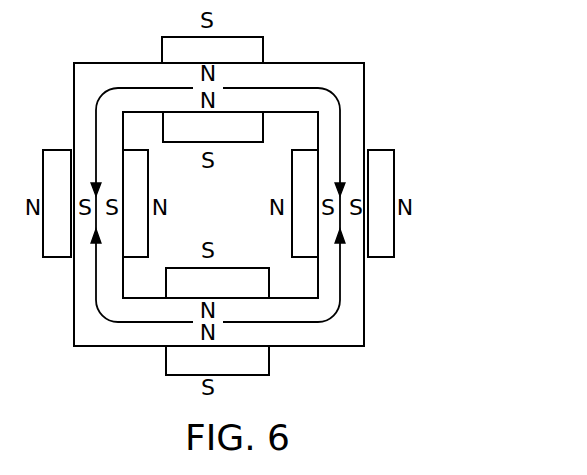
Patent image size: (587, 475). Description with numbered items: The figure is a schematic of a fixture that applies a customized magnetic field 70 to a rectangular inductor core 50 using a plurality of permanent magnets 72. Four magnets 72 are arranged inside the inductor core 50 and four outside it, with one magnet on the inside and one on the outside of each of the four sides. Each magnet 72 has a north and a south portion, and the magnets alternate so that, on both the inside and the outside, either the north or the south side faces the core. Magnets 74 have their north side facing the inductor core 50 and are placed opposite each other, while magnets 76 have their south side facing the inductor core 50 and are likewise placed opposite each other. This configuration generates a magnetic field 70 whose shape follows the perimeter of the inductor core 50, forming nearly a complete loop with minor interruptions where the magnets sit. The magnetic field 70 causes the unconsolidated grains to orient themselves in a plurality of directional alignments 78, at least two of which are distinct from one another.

The inductor core 50 is at (355, 62).
The magnetic field 70 is at (342, 128).
The magnet 72 is at (243, 133).
The magnet with N side facing the inductor core 74 is at (160, 43).
The magnet with S side facing the inductor core 76 is at (55, 257).
The directional alignment 78 is at (98, 97).